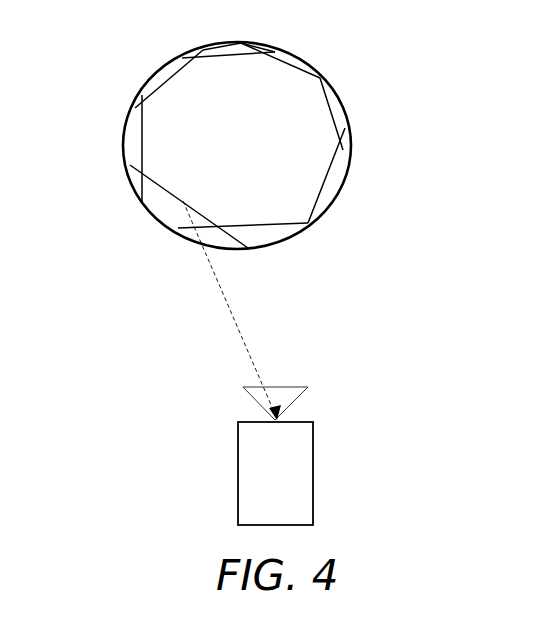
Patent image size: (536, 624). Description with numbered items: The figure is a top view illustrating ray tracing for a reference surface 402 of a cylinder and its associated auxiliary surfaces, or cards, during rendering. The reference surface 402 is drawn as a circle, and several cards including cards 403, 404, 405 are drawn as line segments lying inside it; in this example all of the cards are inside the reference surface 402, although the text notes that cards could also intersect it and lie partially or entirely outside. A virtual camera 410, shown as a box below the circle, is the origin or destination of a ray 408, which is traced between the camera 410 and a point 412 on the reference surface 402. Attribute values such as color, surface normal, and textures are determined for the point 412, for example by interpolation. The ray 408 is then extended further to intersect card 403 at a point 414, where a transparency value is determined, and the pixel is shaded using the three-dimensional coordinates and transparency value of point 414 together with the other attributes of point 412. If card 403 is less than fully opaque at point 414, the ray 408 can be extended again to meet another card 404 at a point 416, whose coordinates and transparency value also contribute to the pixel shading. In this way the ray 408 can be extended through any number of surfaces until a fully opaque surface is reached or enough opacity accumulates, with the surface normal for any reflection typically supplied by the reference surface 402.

The reference surface 402 is at (347, 110).
The card 403 is at (281, 236).
The card 404 is at (173, 184).
The card 405 is at (172, 86).
The ray 408 is at (232, 322).
The camera 410 is at (295, 504).
The point 412 is at (193, 242).
The point 414 is at (187, 221).
The point 416 is at (185, 200).